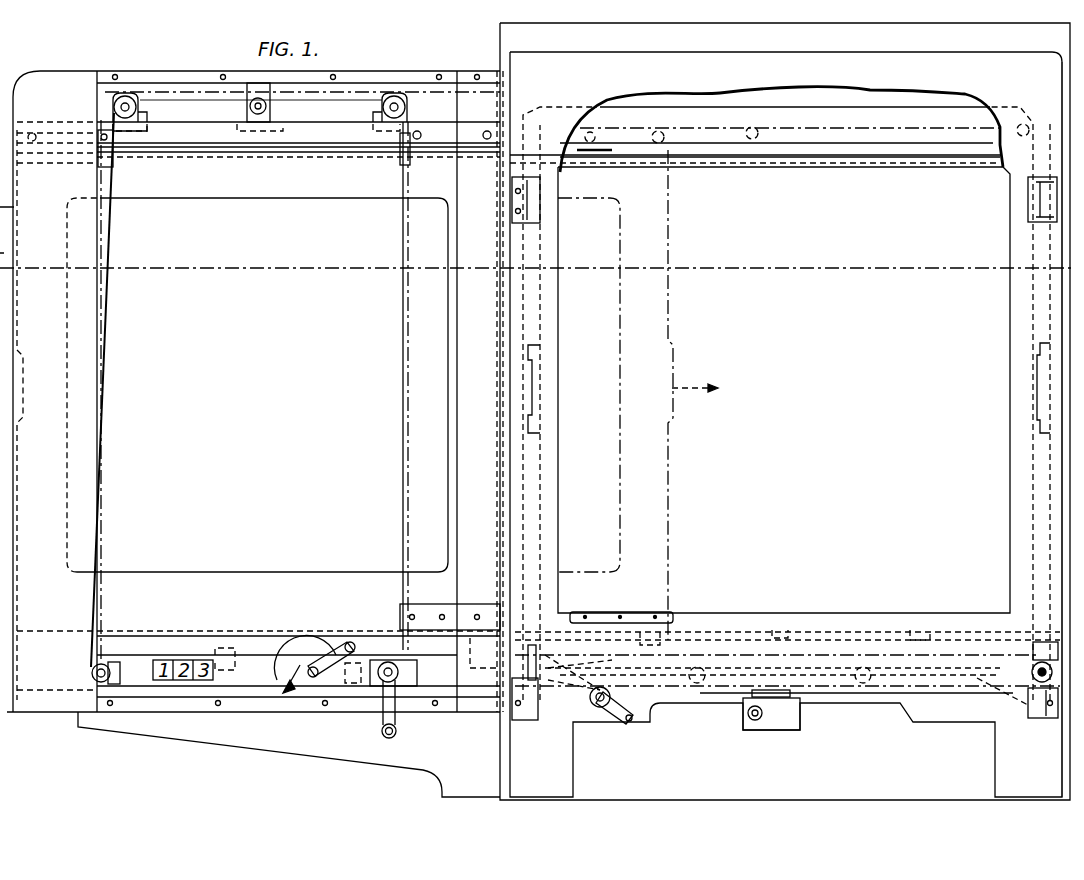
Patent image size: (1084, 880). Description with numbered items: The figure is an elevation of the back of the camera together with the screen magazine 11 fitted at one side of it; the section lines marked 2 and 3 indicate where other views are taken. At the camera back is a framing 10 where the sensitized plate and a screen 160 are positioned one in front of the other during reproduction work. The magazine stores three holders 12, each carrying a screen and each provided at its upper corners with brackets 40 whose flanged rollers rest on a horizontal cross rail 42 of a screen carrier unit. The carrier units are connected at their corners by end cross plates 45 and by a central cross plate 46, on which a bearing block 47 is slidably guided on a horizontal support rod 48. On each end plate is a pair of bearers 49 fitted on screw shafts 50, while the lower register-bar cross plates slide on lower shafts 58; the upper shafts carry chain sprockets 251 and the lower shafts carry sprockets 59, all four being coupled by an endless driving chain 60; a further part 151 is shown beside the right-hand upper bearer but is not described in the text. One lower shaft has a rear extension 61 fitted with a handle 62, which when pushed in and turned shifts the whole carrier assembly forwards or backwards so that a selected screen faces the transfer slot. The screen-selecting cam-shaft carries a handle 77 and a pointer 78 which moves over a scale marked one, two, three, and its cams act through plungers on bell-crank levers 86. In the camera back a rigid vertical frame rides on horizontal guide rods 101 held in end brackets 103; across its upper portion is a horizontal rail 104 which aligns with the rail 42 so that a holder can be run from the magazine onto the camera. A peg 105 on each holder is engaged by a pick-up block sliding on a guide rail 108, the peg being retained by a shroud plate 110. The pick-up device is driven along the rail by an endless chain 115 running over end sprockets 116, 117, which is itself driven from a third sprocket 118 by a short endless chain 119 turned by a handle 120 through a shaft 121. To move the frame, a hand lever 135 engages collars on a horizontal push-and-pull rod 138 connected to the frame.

The framing 10 is at (1020, 366).
The holder 12 is at (320, 205).
The bracket 40 is at (425, 130).
The cross rail 42 is at (300, 152).
The end cross plate 45 is at (128, 131).
The central cross plate 46 is at (72, 160).
The bearing block 47 is at (272, 107).
The support rod 48 is at (249, 105).
The bearer 49 is at (125, 96).
The shaft 50 is at (130, 101).
The shaft 58 is at (91, 672).
The chain sprocket 59 is at (135, 655).
The endless driving chain 60 is at (200, 92).
The rear extension 61 is at (385, 664).
The handle 62 is at (396, 716).
The handle 77 is at (340, 648).
The pointer 78 is at (295, 700).
The bell-crank lever 86 is at (352, 690).
The guide rod 101 is at (961, 691).
The end bracket 103 is at (725, 643).
The horizontal rail 104 is at (830, 157).
The peg 105 is at (700, 640).
The guide rail 108 is at (497, 652).
The plate 110 is at (590, 710).
The endless chain 115 is at (975, 690).
The end sprocket 116 is at (1038, 664).
The end sprocket 117 is at (527, 722).
The third sprocket 118 is at (607, 715).
The short endless chain 119 is at (567, 735).
The handle 120 is at (625, 707).
The shaft 121 is at (655, 705).
The hand lever 135 is at (830, 700).
The push-and-pull rod 138 is at (770, 720).
The pulley 151 is at (400, 100).
The screen 160 is at (400, 437).
The chain sprocket 251 is at (139, 107).
The section line 2 is at (993, 237).
The section line 3 is at (500, 38).
The magazine 11 is at (393, 75).